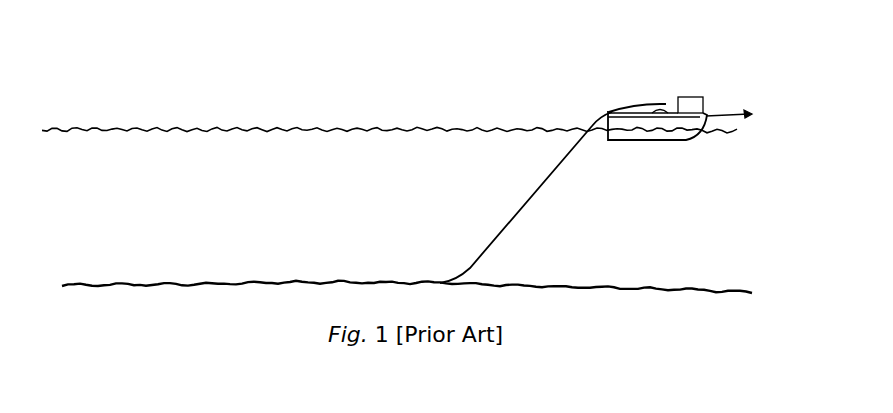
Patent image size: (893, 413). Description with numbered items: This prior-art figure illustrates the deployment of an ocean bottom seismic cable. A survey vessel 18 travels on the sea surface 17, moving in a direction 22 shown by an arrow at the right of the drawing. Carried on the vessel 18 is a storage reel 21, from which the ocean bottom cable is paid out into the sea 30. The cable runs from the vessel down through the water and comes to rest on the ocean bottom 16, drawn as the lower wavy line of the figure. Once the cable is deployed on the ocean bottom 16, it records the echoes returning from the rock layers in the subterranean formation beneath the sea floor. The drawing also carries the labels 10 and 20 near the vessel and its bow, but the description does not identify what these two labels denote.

The surface vessel 10 is at (678, 80).
The ocean bottom 16 is at (600, 283).
The sea surface 17 is at (163, 128).
The survey vessel 18 is at (524, 208).
The towing point at bow 20 is at (608, 113).
The storage reel 21 is at (660, 111).
The direction 22 is at (729, 107).
The sea 30 is at (337, 207).